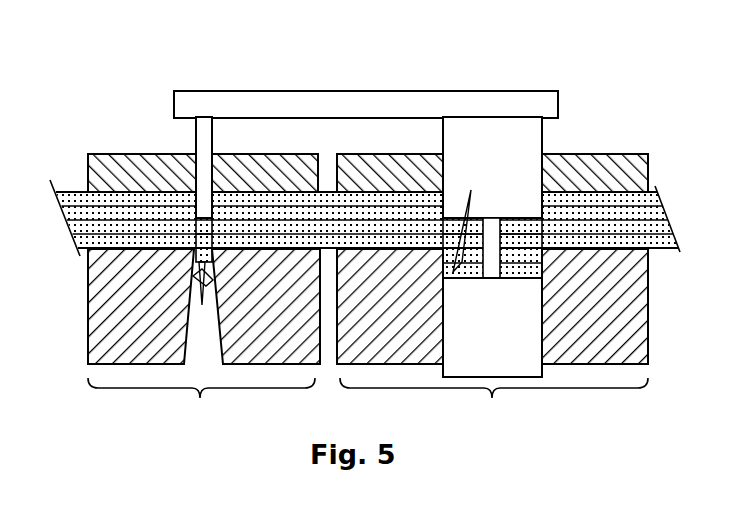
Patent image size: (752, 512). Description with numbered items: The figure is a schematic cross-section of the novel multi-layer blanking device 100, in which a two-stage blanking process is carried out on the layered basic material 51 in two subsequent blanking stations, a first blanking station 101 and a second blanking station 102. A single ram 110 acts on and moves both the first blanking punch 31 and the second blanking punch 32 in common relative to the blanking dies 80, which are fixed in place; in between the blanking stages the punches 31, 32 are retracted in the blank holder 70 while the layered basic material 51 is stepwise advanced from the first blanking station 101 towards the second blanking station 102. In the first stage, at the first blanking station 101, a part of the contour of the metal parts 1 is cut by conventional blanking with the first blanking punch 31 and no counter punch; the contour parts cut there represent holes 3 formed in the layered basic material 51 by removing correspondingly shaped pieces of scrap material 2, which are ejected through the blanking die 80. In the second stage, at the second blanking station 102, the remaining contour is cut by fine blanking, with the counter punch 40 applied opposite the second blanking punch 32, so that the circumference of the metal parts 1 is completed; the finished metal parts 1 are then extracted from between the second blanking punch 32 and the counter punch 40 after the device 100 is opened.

The blanking device 100 is at (388, 34).
The ram 110 is at (360, 100).
The layered basic material 51 is at (69, 190).
The blank holder 70 is at (108, 168).
The blanking die 80 is at (100, 303).
The first blanking punch 31 is at (203, 135).
The second blanking punch 32 is at (530, 140).
The counter punch 40 is at (523, 363).
The metal parts 1 is at (471, 191).
The scrap material 2 is at (203, 296).
The holes 3 is at (492, 250).
The first blanking station 101 is at (201, 403).
The second blanking station 102 is at (494, 403).